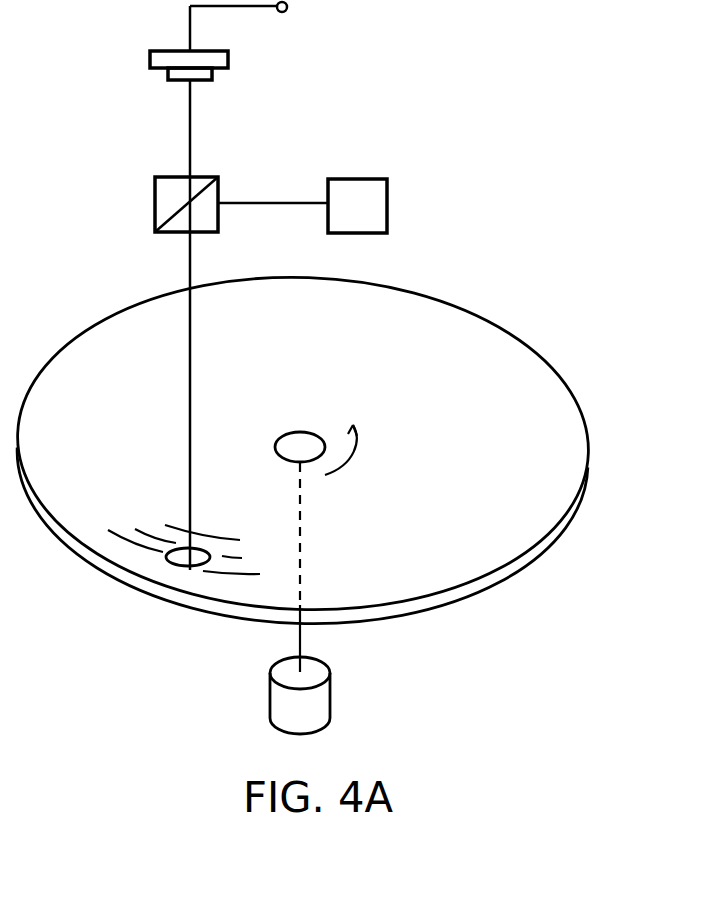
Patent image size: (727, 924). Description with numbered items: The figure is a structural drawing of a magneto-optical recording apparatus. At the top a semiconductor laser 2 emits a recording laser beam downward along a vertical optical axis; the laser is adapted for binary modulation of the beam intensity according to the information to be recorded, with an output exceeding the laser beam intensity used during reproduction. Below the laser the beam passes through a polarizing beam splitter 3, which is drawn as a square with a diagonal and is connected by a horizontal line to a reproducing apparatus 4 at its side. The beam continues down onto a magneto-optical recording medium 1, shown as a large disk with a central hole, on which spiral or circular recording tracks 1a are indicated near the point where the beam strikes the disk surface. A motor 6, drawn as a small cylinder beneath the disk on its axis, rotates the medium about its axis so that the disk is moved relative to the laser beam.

The magneto-optical recording medium 1 is at (590, 470).
The recording tracks 1a is at (237, 573).
The semiconductor laser 2 is at (228, 60).
The polarizing beam splitter 3 is at (218, 181).
The reproducing apparatus 4 is at (387, 196).
The motor 6 is at (330, 696).